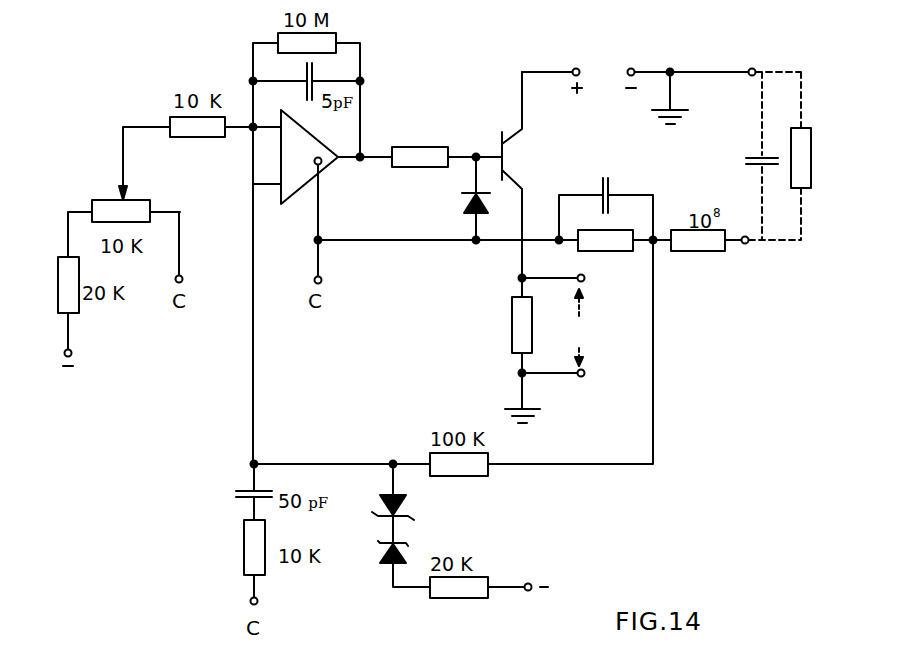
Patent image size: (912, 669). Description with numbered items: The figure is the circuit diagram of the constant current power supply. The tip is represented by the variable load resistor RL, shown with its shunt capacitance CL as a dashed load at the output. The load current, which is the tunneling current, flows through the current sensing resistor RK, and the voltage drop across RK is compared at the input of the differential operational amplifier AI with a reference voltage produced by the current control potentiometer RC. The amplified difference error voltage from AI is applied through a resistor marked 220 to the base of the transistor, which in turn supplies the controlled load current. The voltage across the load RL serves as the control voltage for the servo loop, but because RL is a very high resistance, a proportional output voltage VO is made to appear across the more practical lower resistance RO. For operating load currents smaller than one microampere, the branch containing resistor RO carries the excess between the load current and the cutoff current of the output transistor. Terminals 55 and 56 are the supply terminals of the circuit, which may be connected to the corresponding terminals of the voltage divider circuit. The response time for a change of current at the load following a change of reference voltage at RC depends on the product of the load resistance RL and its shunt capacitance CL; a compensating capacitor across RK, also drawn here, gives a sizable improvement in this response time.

The terminal 55 is at (578, 67).
The terminal 56 is at (633, 67).
The 220 ohm base resistor 220 is at (420, 145).
The differential operational amplifier AI is at (309, 157).
The current control potentiometer RC is at (130, 207).
The current sensing resistor RK is at (598, 252).
The lower resistance RO is at (512, 328).
The output voltage VO is at (577, 327).
The shunt capacitance CL is at (753, 165).
The variable load resistor RL is at (812, 146).